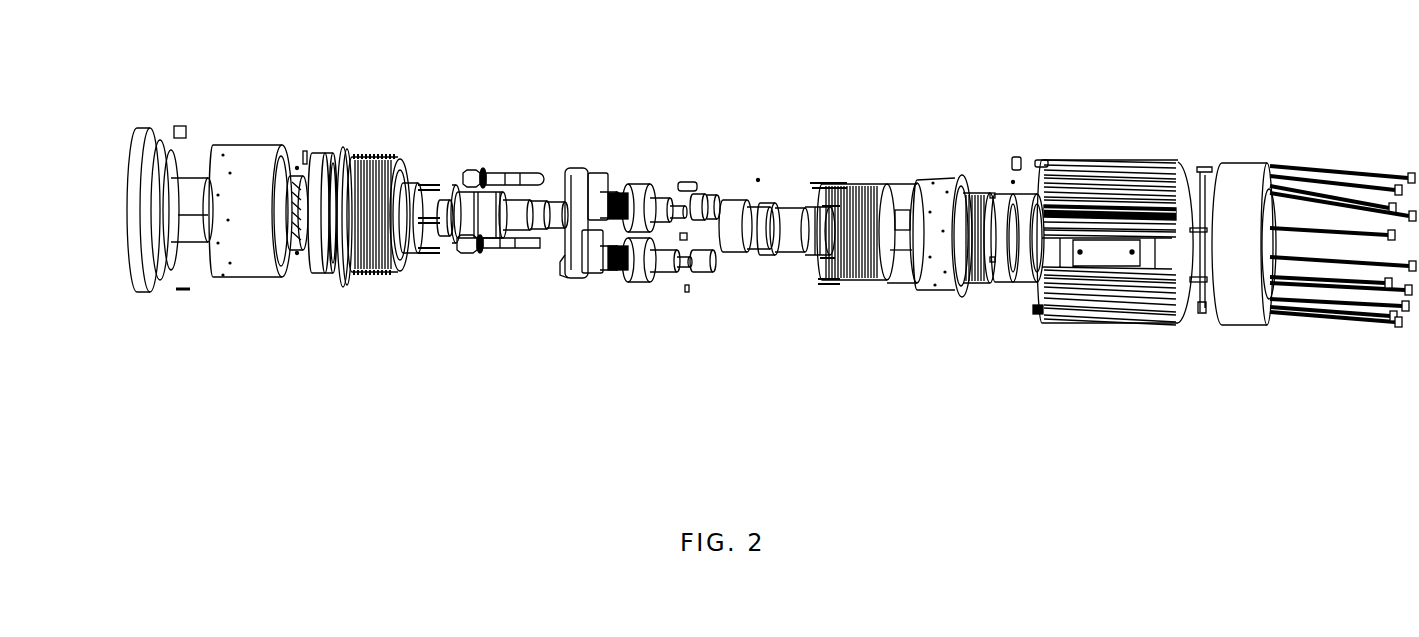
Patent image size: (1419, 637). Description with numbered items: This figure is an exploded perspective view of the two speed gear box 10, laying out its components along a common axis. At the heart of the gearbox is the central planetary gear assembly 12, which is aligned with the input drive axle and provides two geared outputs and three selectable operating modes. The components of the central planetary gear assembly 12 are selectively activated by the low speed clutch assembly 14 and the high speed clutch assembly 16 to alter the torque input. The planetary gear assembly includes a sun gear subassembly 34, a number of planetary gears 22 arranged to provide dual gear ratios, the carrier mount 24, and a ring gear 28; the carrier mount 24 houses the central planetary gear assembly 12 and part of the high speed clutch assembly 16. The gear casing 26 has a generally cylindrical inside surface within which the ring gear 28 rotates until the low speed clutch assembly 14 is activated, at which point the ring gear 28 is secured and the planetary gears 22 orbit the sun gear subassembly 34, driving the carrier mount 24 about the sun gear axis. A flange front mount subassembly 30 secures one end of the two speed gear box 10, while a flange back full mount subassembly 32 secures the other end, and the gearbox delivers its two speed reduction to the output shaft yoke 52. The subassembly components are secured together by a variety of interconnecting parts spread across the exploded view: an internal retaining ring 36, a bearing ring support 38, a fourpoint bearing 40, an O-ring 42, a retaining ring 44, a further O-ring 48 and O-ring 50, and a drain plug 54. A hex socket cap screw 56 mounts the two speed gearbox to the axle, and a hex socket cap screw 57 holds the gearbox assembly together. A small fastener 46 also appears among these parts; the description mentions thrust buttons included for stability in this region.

The two speed gear box 10 is at (943, 107).
The central planetary gear assembly 12 is at (670, 163).
The low speed clutch assembly 14 is at (372, 147).
The high speed clutch assembly 16 is at (997, 160).
The planetary gears 22 is at (637, 220).
The carrier mount 24 is at (580, 168).
The gear casing 26 is at (1160, 160).
The ring gear 28 is at (252, 147).
The flange front mount subassembly 30 is at (1243, 328).
The flange back full mount subassembly 32 is at (170, 130).
The sun gear subassembly 34 is at (293, 173).
The internal retaining ring 36 is at (293, 248).
The bearing ring support 38 is at (302, 250).
The fourpoint bearing 40 is at (310, 250).
The O-ring 42 is at (343, 280).
The retaining ring 44 is at (417, 207).
The screw 46 is at (687, 287).
The O-ring 48 is at (758, 177).
The O-ring 50 is at (963, 297).
The output shaft yoke 52 is at (1030, 283).
The drain plug 54 is at (1037, 312).
The hex soc. cap screw 56 is at (1408, 175).
The hex soc. cap screw 57 is at (1390, 205).